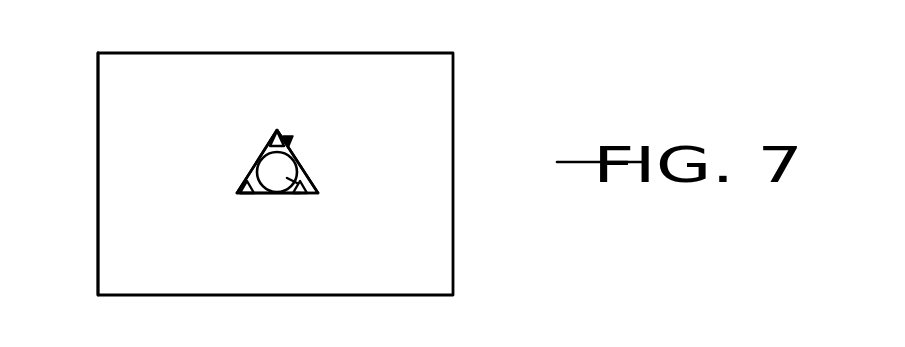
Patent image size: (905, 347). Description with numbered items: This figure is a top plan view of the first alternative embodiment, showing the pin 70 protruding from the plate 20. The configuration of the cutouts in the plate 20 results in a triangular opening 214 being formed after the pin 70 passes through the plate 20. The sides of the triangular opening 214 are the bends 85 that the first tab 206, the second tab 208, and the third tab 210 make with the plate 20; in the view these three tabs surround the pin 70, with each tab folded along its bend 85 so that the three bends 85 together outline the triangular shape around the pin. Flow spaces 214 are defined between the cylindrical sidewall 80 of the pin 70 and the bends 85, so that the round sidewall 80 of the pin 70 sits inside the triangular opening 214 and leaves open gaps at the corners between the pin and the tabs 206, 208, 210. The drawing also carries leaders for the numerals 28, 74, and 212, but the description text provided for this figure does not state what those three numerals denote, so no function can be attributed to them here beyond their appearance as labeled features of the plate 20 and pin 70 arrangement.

The plate 20 is at (428, 100).
The edge 28 is at (107, 245).
The pin 70 is at (288, 160).
The V-groove 74 is at (300, 178).
The cylindrical sidewall 80 is at (288, 138).
The bends 85 is at (300, 148).
The first tab 206 is at (251, 196).
The second tab 208 is at (267, 146).
The third tab 210 is at (287, 178).
The corner 212 is at (248, 184).
The triangular opening 214 is at (273, 138).